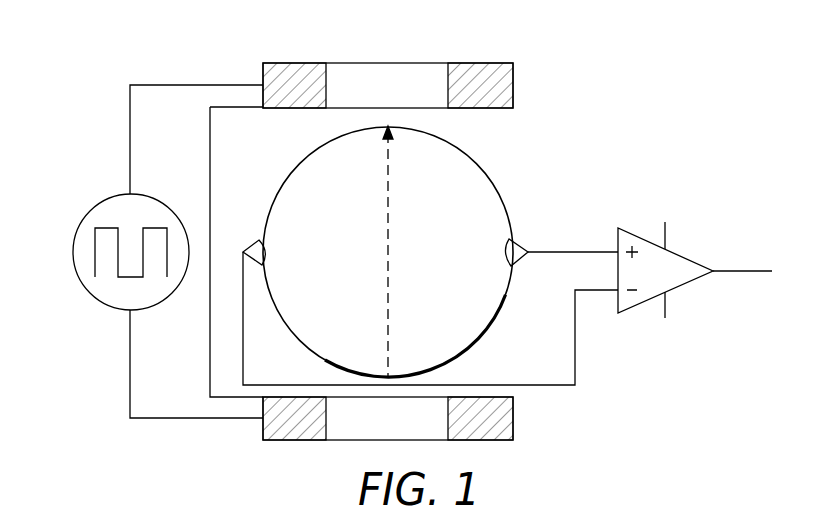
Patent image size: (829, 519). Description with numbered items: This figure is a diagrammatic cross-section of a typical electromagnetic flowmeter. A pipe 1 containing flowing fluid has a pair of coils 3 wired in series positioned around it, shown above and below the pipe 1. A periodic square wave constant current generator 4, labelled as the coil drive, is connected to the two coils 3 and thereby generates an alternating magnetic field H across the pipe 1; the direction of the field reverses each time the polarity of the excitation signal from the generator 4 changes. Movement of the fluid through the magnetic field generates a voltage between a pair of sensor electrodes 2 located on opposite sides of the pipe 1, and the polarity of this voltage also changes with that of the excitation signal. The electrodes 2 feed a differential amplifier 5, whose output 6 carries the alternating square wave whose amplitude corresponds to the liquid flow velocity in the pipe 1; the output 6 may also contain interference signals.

The pipe 1 is at (486, 170).
The sensor electrodes 2 is at (250, 241).
The coils 3 is at (496, 62).
The periodic square wave constant current generator 4 is at (105, 198).
The differential amplifier 5 is at (688, 259).
The output 6 is at (760, 270).